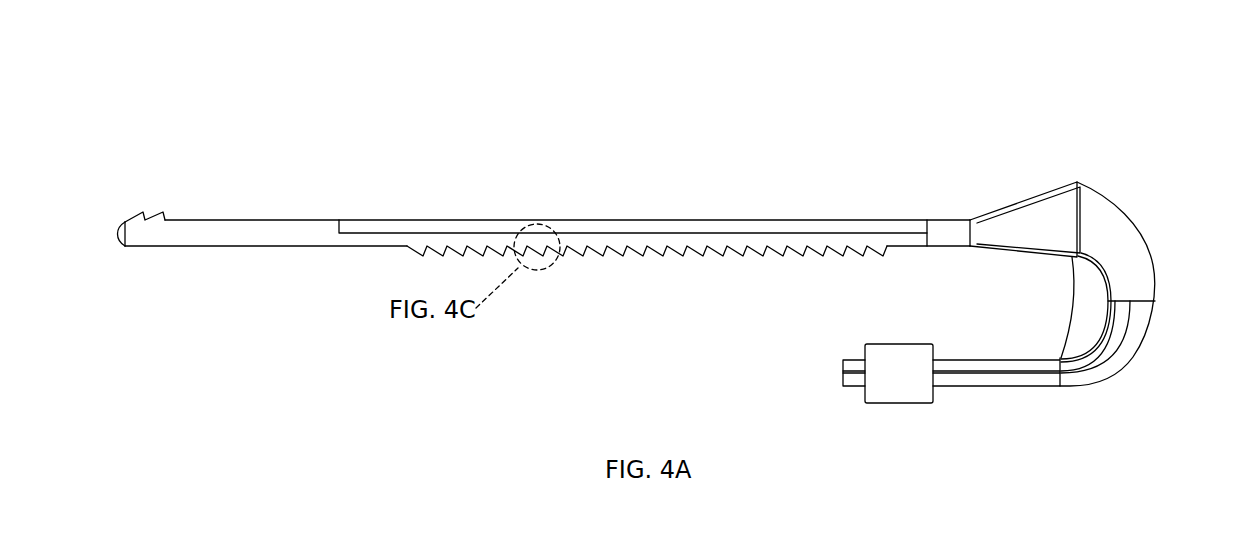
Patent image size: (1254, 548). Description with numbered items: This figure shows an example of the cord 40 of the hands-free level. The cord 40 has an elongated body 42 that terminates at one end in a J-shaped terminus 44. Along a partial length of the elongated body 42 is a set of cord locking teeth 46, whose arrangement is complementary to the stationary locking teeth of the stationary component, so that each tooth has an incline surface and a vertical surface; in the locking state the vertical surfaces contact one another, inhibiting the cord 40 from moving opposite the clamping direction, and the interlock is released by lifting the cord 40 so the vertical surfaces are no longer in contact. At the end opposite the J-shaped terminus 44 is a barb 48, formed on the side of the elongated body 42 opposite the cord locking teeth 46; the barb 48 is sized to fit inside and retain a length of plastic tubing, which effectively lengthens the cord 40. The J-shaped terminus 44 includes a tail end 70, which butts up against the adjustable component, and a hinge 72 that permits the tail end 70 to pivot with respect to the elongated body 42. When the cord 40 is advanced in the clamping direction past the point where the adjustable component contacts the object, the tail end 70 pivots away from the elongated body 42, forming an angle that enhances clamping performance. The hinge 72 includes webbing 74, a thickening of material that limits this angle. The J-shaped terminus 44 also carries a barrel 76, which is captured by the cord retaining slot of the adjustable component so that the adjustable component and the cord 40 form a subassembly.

The cord 40 is at (1144, 118).
The elongated body 42 is at (292, 220).
The J-shaped terminus 44 is at (1077, 181).
The cord locking teeth 46 is at (607, 254).
The barb 48 is at (163, 213).
The tail end 70 is at (843, 380).
The hinge 72 is at (1123, 229).
The webbing 74 is at (1090, 322).
The barrel 76 is at (900, 397).